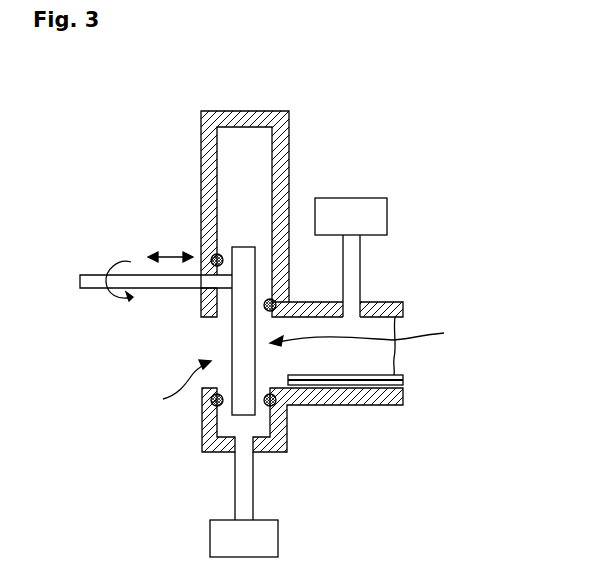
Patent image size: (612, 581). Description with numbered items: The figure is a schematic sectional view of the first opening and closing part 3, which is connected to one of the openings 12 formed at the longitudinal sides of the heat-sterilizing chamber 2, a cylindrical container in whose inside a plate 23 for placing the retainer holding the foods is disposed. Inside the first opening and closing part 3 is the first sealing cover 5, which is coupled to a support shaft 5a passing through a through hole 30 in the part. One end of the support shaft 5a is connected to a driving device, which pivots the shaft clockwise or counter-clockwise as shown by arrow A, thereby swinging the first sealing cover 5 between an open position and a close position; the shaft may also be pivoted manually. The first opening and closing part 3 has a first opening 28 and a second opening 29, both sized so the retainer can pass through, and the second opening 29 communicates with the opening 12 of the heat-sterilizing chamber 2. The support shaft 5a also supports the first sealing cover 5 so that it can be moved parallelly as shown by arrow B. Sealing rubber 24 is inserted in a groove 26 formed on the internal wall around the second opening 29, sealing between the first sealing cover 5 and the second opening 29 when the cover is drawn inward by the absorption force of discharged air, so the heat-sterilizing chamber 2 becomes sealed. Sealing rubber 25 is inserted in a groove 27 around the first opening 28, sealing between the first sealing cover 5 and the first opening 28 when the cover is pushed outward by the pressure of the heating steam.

The heat-sterilizing chamber 2 is at (374, 405).
The first opening and closing part 3 is at (244, 111).
The first sealing cover 5 is at (232, 339).
The support shaft 5a is at (142, 275).
The arrow A is at (133, 267).
The arrow B is at (176, 252).
The opening 12 is at (400, 339).
The plate 23 is at (394, 373).
The sealing rubber 24 is at (276, 300).
The sealing rubber 25 is at (216, 254).
The groove 26 is at (276, 405).
The groove 27 is at (212, 406).
The first opening 28 is at (172, 387).
The second opening 29 is at (387, 334).
The through hole 30 is at (202, 289).